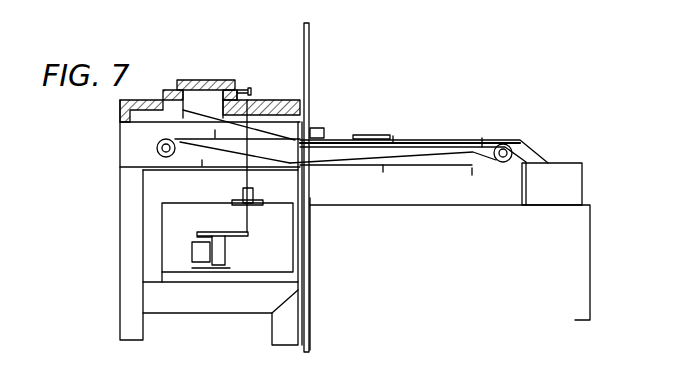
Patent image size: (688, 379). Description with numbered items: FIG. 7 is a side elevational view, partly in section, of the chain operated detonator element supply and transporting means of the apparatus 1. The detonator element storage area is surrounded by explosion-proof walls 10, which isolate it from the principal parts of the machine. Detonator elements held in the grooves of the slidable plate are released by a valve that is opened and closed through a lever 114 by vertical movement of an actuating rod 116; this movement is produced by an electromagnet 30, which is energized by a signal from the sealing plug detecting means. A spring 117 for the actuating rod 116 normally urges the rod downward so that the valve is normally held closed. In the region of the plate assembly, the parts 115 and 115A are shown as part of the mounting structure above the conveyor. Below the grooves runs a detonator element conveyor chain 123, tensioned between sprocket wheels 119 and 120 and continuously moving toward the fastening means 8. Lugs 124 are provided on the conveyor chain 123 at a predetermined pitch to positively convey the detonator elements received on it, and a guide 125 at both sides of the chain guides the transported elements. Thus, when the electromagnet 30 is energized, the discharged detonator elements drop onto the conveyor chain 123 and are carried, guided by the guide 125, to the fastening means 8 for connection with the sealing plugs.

The machine base 1 is at (588, 260).
The fastening means 8 is at (550, 197).
The explosion-proof walls 10 is at (317, 50).
The electromagnet 30 is at (190, 252).
The lever 114 is at (249, 92).
The cover plate 115 is at (177, 81).
The clamp block 115A is at (234, 89).
The actuating rod 116 is at (254, 107).
The spring 117 is at (248, 202).
The sprocket wheel 119 is at (157, 146).
The sprocket wheel 120 is at (497, 166).
The detonator element conveyor chain 123 is at (453, 137).
The lugs 124 is at (400, 137).
The guide 125 is at (353, 136).